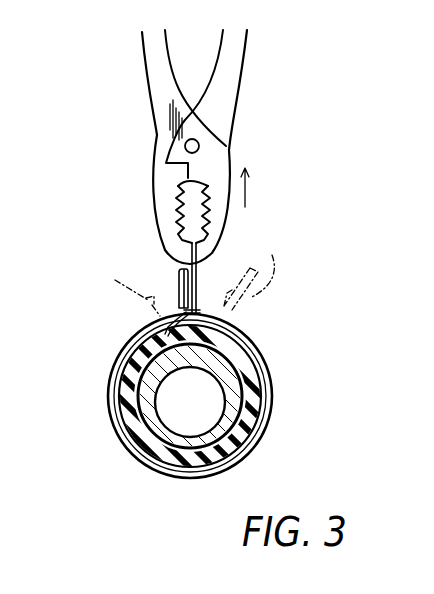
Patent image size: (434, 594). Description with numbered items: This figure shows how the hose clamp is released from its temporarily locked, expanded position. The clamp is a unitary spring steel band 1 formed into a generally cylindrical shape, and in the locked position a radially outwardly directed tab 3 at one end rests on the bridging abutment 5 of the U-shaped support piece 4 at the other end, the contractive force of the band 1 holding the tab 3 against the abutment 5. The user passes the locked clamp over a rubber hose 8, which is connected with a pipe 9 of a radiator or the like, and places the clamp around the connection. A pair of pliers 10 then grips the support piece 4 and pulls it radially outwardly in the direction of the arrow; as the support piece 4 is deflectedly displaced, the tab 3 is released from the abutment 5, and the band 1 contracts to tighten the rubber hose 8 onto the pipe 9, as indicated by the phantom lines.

The band 1 is at (262, 363).
The tab 3 is at (177, 303).
The support piece 4 is at (197, 282).
The abutment 5 is at (178, 292).
The rubber hose 8 is at (118, 355).
The pipe 9 is at (163, 415).
The pliers 10 is at (238, 72).